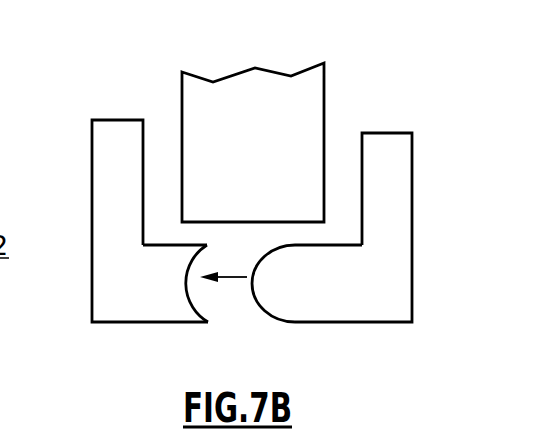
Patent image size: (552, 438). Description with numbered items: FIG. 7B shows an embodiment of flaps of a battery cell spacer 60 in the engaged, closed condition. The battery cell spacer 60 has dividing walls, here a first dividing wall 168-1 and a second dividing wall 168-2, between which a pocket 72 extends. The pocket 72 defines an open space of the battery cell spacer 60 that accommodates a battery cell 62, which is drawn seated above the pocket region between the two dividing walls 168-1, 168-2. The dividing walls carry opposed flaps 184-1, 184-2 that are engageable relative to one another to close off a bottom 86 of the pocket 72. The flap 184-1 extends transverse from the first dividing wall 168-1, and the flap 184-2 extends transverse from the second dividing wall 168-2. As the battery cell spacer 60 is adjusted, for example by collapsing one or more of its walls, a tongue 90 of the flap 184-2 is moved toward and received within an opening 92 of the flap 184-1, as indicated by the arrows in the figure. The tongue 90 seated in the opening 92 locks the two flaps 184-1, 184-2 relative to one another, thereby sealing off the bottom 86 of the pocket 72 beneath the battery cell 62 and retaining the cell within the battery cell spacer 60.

The battery cell spacer 60 is at (371, 52).
The battery cell 62 is at (264, 158).
The pocket 72 is at (345, 151).
The bottom of the pocket 86 is at (312, 236).
The tongue 90 is at (277, 288).
The opening 92 is at (199, 288).
The first dividing wall 168-1 is at (110, 162).
The second dividing wall 168-2 is at (403, 162).
The flap 184-1 is at (137, 305).
The flap 184-2 is at (366, 297).